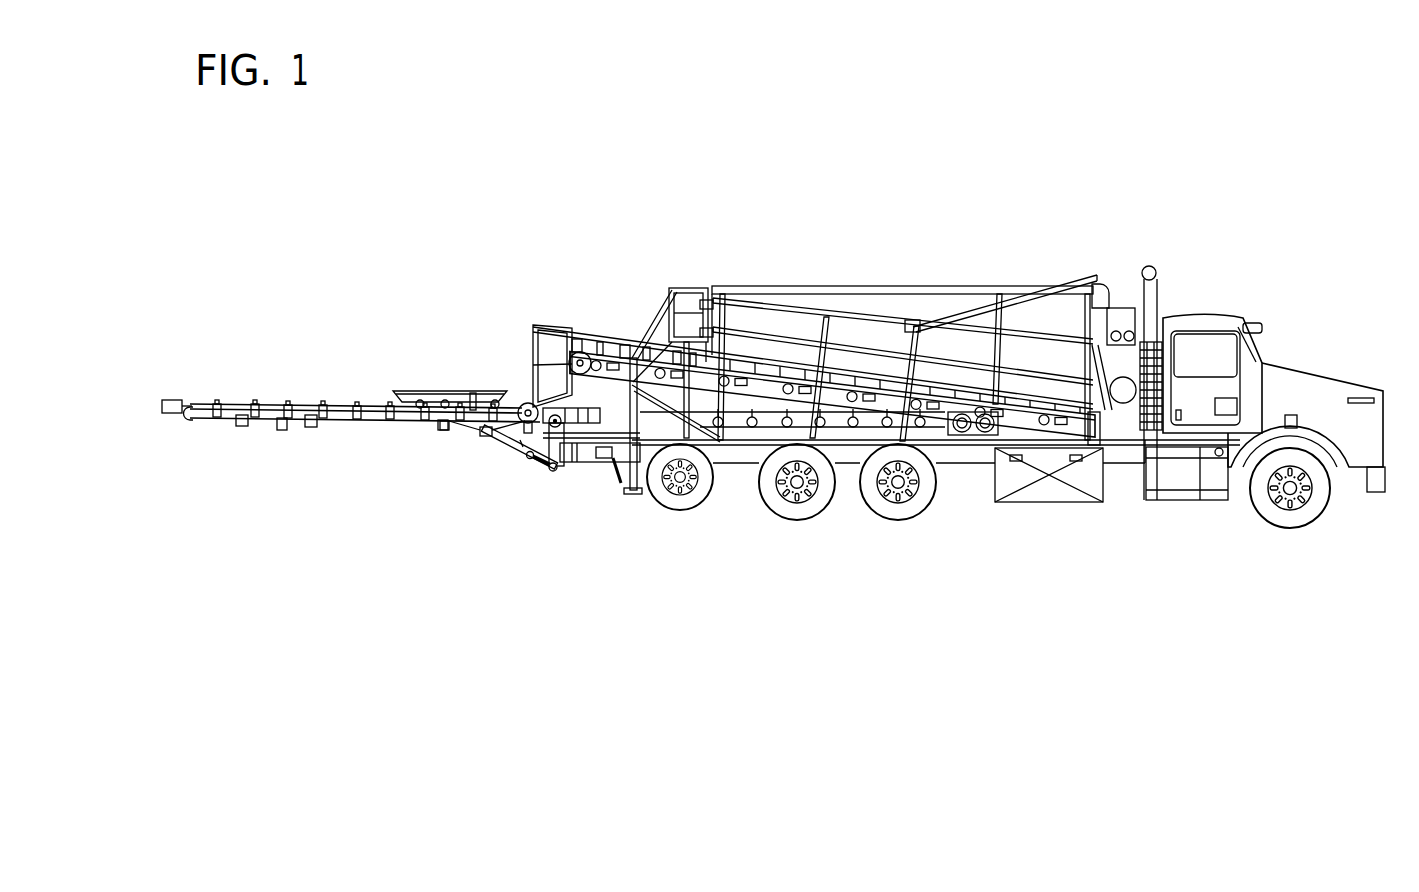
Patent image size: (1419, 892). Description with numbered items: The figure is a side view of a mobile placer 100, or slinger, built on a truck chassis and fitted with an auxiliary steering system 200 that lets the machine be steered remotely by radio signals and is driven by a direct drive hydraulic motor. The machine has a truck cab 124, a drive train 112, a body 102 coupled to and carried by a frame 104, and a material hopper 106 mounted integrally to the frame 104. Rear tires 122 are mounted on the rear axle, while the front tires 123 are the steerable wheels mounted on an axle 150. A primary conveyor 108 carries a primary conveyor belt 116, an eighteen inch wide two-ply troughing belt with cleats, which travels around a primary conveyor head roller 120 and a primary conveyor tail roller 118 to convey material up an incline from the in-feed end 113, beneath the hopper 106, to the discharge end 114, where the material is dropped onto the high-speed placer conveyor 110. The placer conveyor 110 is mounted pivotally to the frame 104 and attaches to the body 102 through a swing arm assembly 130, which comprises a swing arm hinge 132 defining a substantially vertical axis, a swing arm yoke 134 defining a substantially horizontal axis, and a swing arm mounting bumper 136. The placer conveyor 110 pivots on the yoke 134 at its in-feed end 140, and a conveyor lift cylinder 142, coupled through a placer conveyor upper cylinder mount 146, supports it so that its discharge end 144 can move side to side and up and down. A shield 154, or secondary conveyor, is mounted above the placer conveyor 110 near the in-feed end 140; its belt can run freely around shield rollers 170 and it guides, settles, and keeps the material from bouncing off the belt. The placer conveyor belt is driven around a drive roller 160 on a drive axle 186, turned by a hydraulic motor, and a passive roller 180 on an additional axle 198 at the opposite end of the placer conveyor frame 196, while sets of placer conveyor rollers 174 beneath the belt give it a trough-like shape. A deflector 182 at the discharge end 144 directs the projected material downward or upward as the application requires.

The mobile placer 100 is at (630, 158).
The body 102 is at (1010, 320).
The frame 104 is at (967, 463).
The material hopper 106 is at (878, 290).
The primary conveyor 108 is at (769, 355).
The placer conveyor 110 is at (337, 382).
The drive train 112 is at (742, 438).
The in-feed end of primary conveyor 113 is at (1057, 408).
The discharge end of primary conveyor 114 is at (605, 345).
The primary conveyor belt 116 is at (838, 332).
The primary conveyor tail roller 118 is at (1097, 424).
The primary conveyor head roller 120 is at (569, 364).
The rear tires 122 is at (885, 515).
The front tires 123 is at (1277, 520).
The truck cab 124 is at (1265, 290).
The swing arm assembly 130 is at (593, 464).
The swing arm hinge 132 is at (550, 432).
The swing arm yoke 134 is at (530, 456).
The swing arm mounting bumper 136 is at (640, 494).
The in-feed end of placer conveyor 140 is at (525, 407).
The conveyor lift cylinder 142 is at (490, 436).
The discharge end of placer conveyor 144 is at (240, 404).
The placer conveyor upper cylinder mount 146 is at (465, 430).
The axle 150 is at (1297, 487).
The shield 154 is at (423, 393).
The drive roller 160 is at (524, 408).
The shield rollers 170 is at (375, 407).
The placer conveyor rollers 174 is at (290, 407).
The roller 180 is at (182, 413).
The deflector 182 is at (168, 403).
The drive axle 186 is at (527, 435).
The placer conveyor frame 196 is at (230, 418).
The additional axle 198 is at (200, 405).
The auxiliary steering system 200 is at (1297, 405).